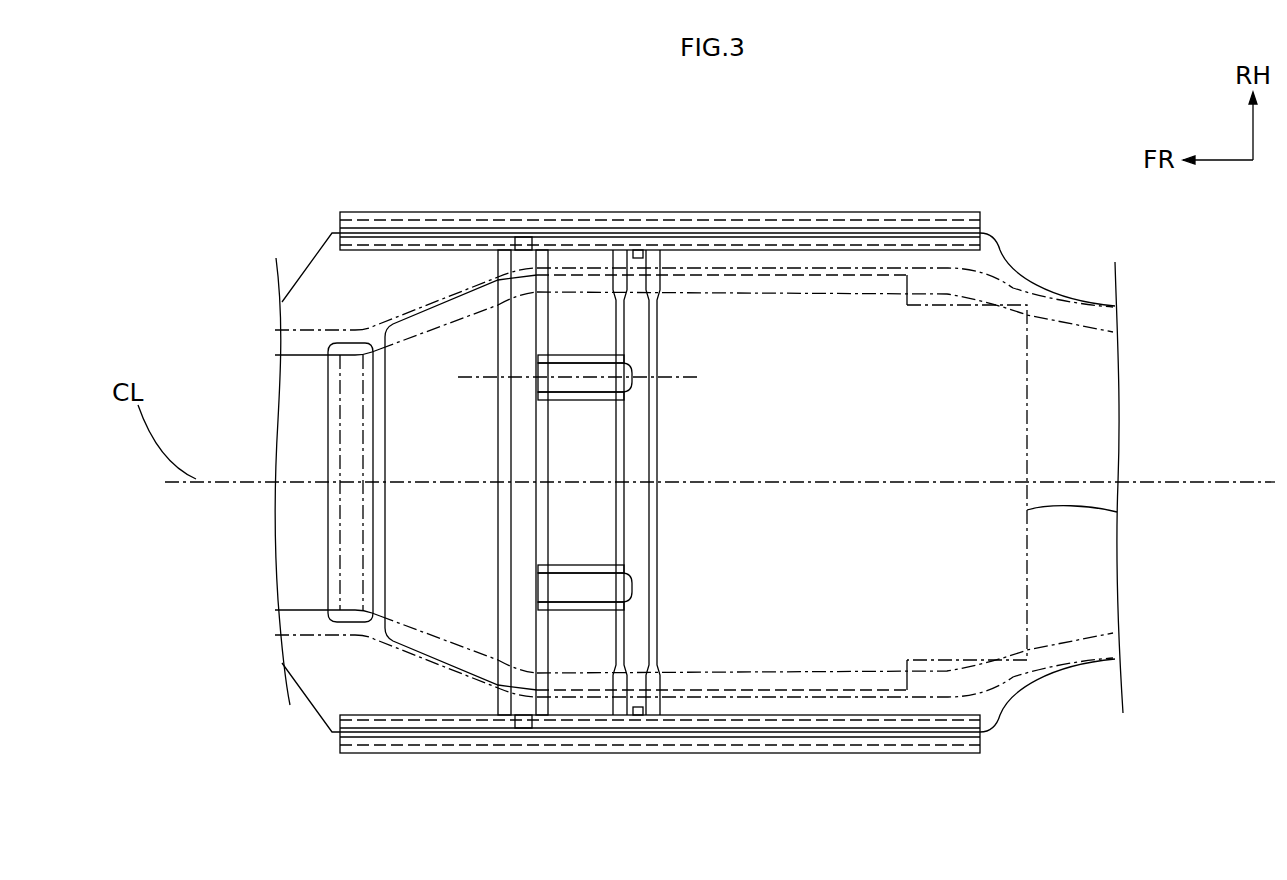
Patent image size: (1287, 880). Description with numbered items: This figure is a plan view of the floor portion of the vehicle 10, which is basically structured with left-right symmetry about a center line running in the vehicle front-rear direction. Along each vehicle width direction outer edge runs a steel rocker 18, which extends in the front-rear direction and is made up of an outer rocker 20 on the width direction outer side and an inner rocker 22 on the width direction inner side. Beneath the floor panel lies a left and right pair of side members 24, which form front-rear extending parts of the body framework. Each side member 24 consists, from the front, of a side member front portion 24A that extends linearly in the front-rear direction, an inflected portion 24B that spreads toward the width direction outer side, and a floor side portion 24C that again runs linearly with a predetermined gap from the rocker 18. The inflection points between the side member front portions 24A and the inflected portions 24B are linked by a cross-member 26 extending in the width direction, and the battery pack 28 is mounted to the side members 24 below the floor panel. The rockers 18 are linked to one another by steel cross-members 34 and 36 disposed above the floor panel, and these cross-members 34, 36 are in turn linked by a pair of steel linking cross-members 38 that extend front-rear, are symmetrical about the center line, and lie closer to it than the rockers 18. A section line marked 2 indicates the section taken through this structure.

The vehicle 10 is at (918, 157).
The rocker 18 is at (678, 214).
The outer rocker 20 is at (790, 228).
The inner rocker 22 is at (938, 243).
The side member 24 is at (977, 272).
The side member front portion 24A is at (300, 345).
The inflected portion 24B is at (427, 322).
The floor side portion 24C is at (918, 283).
The cross-member 26 is at (333, 540).
The battery pack 28 is at (1117, 512).
The cross-member 34 is at (523, 528).
The cross-member 36 is at (640, 521).
The linking cross-member 38 is at (585, 373).
The section line 2- 2 is at (696, 377).